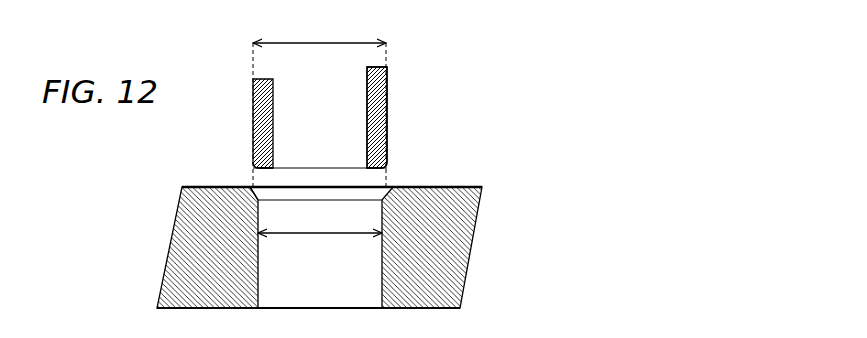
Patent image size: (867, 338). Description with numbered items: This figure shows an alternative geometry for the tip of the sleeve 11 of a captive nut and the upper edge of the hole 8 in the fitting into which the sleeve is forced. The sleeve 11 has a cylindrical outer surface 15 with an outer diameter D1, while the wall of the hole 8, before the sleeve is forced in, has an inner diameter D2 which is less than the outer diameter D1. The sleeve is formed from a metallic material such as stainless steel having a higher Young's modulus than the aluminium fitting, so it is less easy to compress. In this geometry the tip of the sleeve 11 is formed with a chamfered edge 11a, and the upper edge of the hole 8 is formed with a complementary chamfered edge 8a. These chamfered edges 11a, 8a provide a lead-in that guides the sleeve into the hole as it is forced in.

The hole 8 is at (319, 247).
The chamfered edge 8a is at (256, 197).
The sleeve 11 is at (367, 91).
The chamfered edge 11a is at (253, 167).
The outer surface 15 is at (387, 75).
The outer diameter D1 is at (319, 105).
The inner diameter D2 is at (320, 245).